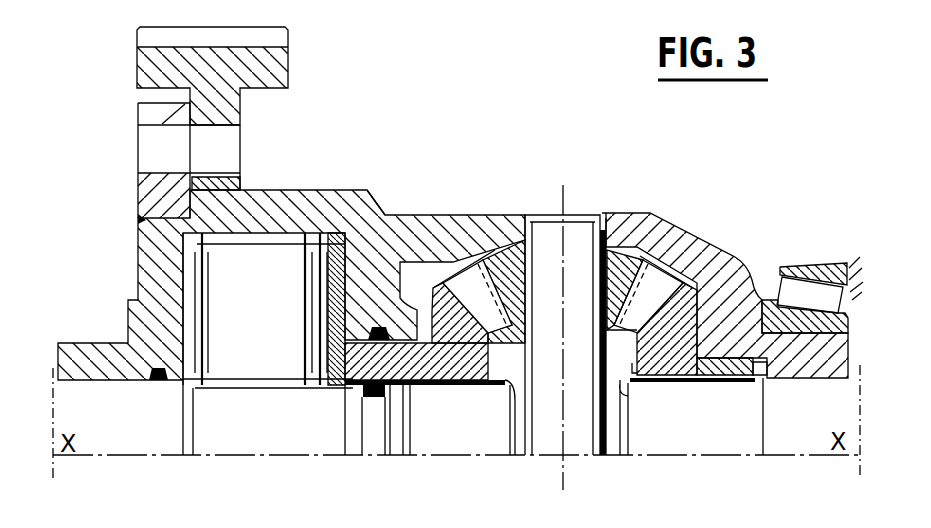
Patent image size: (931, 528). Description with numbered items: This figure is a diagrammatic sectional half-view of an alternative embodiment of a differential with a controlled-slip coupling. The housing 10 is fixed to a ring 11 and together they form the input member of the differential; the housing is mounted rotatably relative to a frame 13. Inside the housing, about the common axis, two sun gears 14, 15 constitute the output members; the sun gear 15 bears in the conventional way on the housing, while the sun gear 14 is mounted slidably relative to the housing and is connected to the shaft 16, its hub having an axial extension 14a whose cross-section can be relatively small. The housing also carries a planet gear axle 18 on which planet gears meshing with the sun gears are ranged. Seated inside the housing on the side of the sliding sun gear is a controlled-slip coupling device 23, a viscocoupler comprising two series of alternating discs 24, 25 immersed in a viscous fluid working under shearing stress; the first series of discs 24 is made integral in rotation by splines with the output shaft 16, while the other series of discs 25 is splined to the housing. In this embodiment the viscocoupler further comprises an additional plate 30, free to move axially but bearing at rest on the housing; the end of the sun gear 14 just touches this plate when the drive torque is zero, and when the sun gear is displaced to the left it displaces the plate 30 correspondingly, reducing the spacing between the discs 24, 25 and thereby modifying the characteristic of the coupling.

The housing 10 is at (305, 190).
The ring 11 is at (272, 78).
The frame 13 is at (787, 243).
The sun gear 14 is at (447, 365).
The axial extension 14a is at (410, 398).
The sun gear 15 is at (674, 366).
The shaft 16 is at (343, 445).
The planet gear axle 18 is at (582, 238).
The controlled-slip coupling device 23 is at (288, 330).
The first series of discs 24 is at (297, 381).
The second series of discs 25 is at (292, 243).
The additional plate 30 is at (385, 212).